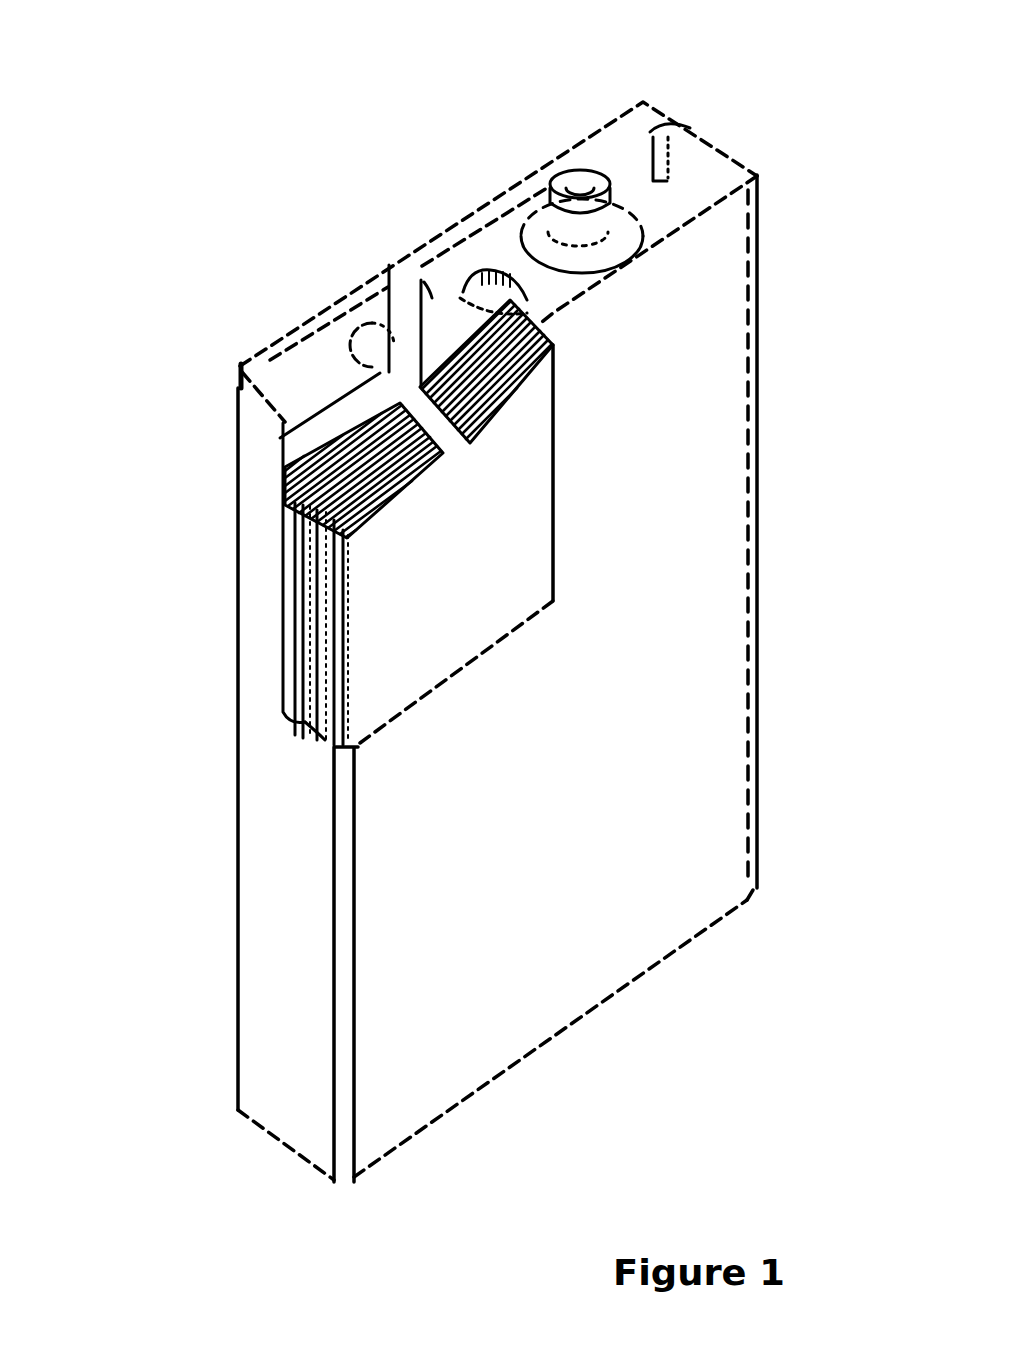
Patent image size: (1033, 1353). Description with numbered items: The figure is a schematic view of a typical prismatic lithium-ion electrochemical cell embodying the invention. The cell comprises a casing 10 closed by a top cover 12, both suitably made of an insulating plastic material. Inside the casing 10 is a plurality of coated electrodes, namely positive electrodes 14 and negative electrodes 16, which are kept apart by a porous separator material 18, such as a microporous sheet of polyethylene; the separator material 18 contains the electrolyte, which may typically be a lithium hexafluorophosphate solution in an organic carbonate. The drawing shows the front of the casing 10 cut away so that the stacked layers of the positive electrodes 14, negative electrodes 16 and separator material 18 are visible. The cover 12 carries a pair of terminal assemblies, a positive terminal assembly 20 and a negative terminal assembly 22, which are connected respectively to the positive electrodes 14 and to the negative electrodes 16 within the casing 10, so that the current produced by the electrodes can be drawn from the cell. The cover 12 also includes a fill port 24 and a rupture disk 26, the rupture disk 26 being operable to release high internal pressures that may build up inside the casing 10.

The casing 10 is at (573, 790).
The top cover 12 is at (303, 377).
The positive electrodes 14 is at (352, 540).
The negative electrodes 16 is at (352, 590).
The porous separator material 18 is at (340, 708).
The positive terminal assembly 20 is at (578, 163).
The negative terminal assembly 22 is at (385, 292).
The fill port 24 is at (662, 122).
The rupture disk 26 is at (486, 268).